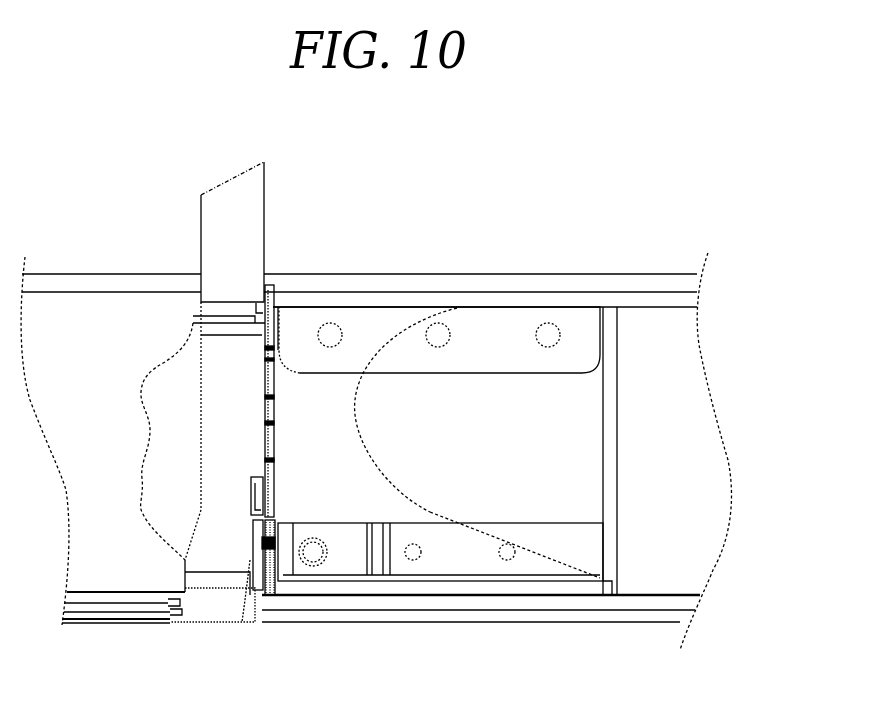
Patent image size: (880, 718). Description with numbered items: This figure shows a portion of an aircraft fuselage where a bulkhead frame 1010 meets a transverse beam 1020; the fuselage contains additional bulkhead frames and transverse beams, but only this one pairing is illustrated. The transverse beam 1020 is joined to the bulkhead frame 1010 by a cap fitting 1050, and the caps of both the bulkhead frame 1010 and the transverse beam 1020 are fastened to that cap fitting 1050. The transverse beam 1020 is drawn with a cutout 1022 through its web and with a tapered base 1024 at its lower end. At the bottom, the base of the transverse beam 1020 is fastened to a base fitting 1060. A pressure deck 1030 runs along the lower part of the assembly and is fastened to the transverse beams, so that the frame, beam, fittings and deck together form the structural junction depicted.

The bulkhead frame 1010 is at (713, 413).
The transverse beam 1020 is at (87, 622).
The cutout 1022 is at (357, 443).
The tapered base 1024 is at (557, 560).
The pressure deck 1030 is at (548, 665).
The cap fitting 1050 is at (498, 373).
The base fitting 1060 is at (353, 577).